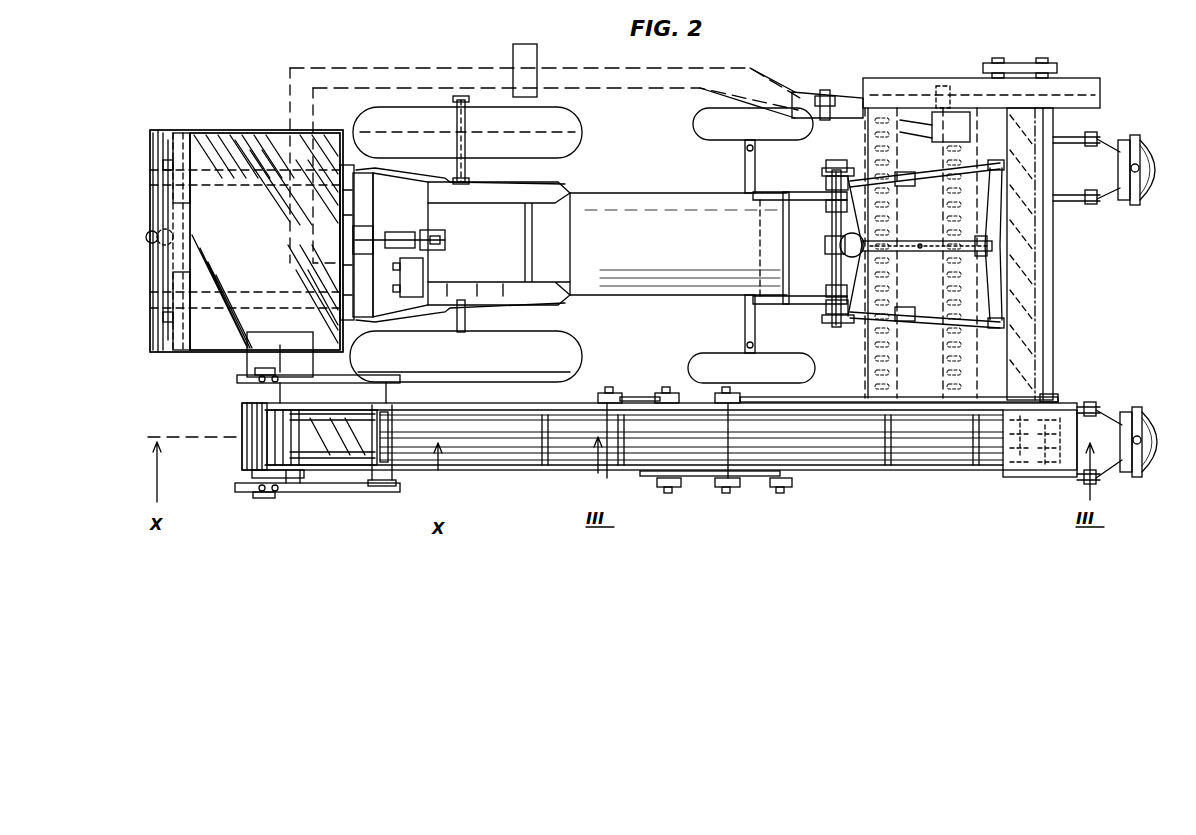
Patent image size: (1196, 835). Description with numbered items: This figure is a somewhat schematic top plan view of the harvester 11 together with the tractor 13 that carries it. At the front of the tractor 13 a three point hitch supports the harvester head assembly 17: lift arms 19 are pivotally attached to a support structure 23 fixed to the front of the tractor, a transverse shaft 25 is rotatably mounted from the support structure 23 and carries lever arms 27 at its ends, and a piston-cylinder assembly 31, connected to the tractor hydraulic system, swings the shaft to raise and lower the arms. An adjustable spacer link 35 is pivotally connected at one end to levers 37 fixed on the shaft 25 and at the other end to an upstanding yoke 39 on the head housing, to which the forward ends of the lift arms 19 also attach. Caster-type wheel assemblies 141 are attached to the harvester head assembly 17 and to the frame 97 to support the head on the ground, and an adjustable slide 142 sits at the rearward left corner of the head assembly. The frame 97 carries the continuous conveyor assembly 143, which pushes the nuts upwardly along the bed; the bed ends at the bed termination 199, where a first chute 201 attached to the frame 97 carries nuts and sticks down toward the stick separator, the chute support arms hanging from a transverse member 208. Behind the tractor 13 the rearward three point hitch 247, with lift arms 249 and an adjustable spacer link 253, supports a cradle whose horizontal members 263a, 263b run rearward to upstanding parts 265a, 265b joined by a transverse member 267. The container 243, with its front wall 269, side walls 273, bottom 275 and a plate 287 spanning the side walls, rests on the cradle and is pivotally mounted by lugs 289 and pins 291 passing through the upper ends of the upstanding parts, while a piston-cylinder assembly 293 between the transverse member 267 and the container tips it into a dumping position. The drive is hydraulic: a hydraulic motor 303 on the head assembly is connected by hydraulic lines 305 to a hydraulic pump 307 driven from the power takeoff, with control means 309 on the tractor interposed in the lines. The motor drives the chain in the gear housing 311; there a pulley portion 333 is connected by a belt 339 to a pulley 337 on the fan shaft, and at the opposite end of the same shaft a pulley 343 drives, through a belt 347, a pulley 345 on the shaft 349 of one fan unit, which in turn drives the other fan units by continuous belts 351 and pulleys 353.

The harvester 11 is at (1062, 528).
The tractor 13 is at (644, 200).
The harvester head assembly 17 is at (1062, 318).
The lift arms 19 is at (932, 172).
The support structure 23 is at (788, 304).
The transverse shaft 25 is at (830, 278).
The lever arms 27 is at (850, 170).
The piston-cylinder assembly 31 is at (835, 216).
The adjustable spacer link 35 is at (912, 246).
The levers 37 is at (826, 250).
The upstanding yoke 39 is at (1000, 222).
The frame 97 is at (848, 480).
The wheel assemblies 141 is at (1152, 186).
The adjustable slide 142 is at (818, 92).
The conveyor assembly 143 is at (904, 470).
The bed termination 199 is at (380, 490).
The first chute 201 is at (350, 472).
The transverse member 208 is at (392, 478).
The container 243 is at (152, 128).
The rearward three point hitch 247 is at (446, 316).
The lift arms 249 is at (408, 170).
The adjustable spacer link 253 is at (398, 230).
The horizontal portion part 263a is at (240, 300).
The horizontal portion part 263b is at (266, 180).
The upstanding rearward part 265a is at (168, 296).
The upstanding rearward part 265b is at (168, 178).
The transverse member 267 is at (158, 214).
The front wall 269 is at (348, 162).
The side walls 273 is at (232, 130).
The bottom 275 is at (244, 246).
The plate 287 is at (160, 262).
The lugs 289 is at (160, 160).
The pins 291 is at (160, 150).
The piston-cylinder assembly 293 is at (146, 238).
The hydraulic motor 303 is at (947, 100).
The hydraulic lines 305 is at (395, 75).
The hydraulic pump 307 is at (430, 278).
The control means 309 is at (537, 58).
The gear housing 311 is at (858, 80).
The pulley portion 333 is at (1044, 58).
The pulley 337 is at (996, 58).
The belt 339 is at (1020, 62).
The pulley 343 is at (1058, 396).
The pulley 345 is at (728, 356).
The belt 347 is at (846, 397).
The shaft 349 is at (730, 492).
The belts 351 is at (640, 395).
The pulleys 353 is at (606, 392).